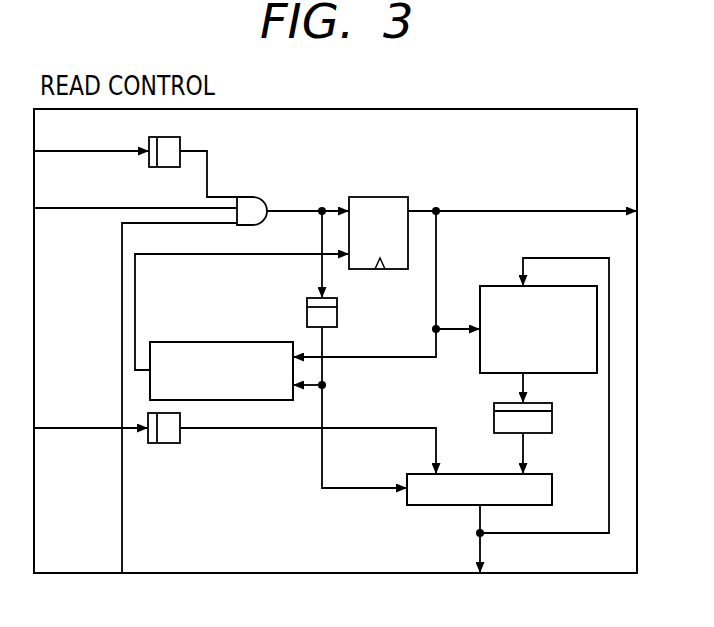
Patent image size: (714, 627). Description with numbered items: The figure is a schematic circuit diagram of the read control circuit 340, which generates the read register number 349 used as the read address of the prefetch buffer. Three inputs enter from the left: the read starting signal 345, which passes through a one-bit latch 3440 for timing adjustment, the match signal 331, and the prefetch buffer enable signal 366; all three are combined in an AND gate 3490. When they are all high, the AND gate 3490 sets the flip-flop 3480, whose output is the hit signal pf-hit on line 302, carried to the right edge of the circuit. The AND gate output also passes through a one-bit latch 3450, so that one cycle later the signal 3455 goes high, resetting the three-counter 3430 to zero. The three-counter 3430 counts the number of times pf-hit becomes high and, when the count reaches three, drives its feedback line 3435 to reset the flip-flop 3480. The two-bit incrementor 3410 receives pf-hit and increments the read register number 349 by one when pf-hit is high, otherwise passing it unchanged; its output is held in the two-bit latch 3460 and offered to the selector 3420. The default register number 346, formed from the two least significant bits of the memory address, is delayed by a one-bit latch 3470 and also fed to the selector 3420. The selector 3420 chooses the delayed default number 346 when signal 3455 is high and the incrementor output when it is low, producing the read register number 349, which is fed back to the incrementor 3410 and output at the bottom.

The read control circuit 340 is at (525, 108).
The read starting signal 345 is at (118, 150).
The match signal 331 is at (119, 205).
The one-bit latch 3440 is at (182, 140).
The AND gate 3490 is at (254, 197).
The flip-flop 3480 is at (382, 197).
The hit signal pf-hit 302 is at (474, 213).
The feedback signal line 3435 is at (135, 294).
The 3-counter 3430 is at (201, 341).
The one-bit latch 3450 is at (337, 312).
The reset/select signal 3455 is at (325, 407).
The 2-bit incrementor 3410 is at (489, 287).
The two-bit latch 3460 is at (494, 421).
The selector 3420 is at (528, 472).
The read register number 349 is at (478, 555).
The default register number 346 is at (107, 423).
The prefetch buffer enable signal 366 is at (121, 540).
The one-bit latch 3470 is at (169, 443).